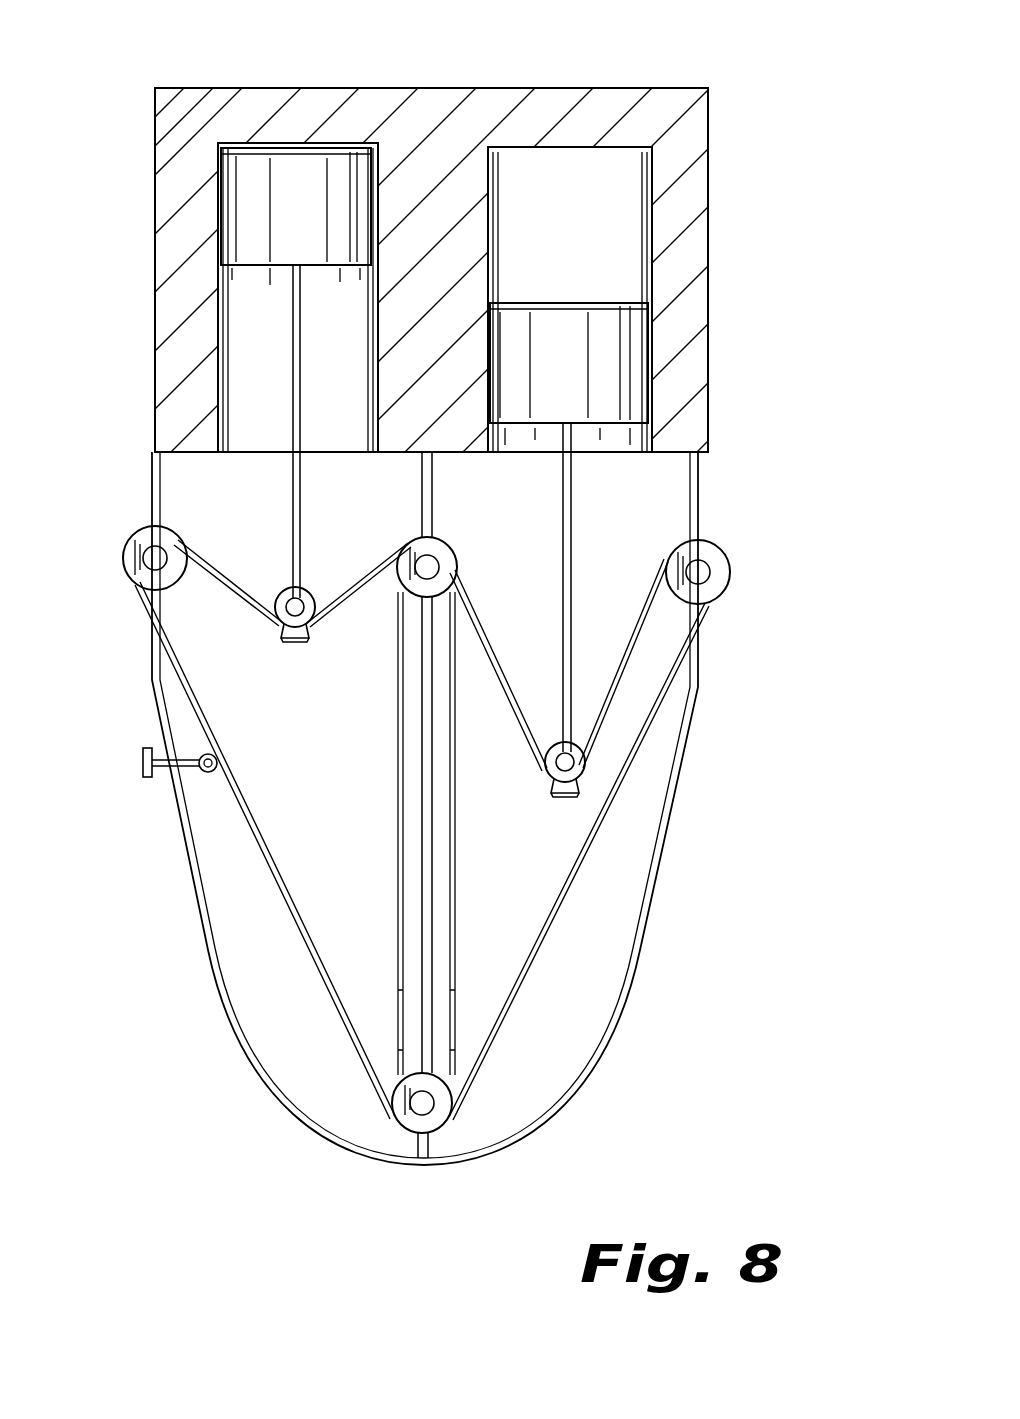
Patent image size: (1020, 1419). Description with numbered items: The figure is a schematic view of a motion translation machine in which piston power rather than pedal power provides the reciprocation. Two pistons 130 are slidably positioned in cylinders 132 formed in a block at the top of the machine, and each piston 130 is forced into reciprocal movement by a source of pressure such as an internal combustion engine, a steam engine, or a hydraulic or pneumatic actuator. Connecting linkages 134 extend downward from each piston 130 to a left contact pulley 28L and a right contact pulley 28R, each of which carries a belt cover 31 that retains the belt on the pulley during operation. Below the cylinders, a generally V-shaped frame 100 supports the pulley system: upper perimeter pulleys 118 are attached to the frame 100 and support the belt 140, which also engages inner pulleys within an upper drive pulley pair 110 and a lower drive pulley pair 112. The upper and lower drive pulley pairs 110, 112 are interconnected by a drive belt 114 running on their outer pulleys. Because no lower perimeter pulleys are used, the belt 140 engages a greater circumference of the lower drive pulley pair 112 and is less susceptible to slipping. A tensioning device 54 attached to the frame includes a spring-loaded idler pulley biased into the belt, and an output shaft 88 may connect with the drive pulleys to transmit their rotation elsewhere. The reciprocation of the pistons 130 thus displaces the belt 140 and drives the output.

The V shaped frame 100 is at (732, 146).
The piston 130 is at (256, 204).
The cylinder 132 is at (218, 346).
The connecting linkage 134 is at (302, 503).
The upper perimeter pulley 118 is at (150, 548).
The upper drive pulley pair 110 is at (441, 558).
The lower drive pulley pair 112 is at (404, 1118).
The left contact pulley 28L is at (280, 600).
The right contact pulley 28R is at (550, 776).
The belt cover 31 is at (294, 640).
The output shaft 88 is at (425, 561).
The tensioning device 54 is at (140, 748).
The drive belt 114 is at (406, 850).
The belt 140 is at (520, 988).